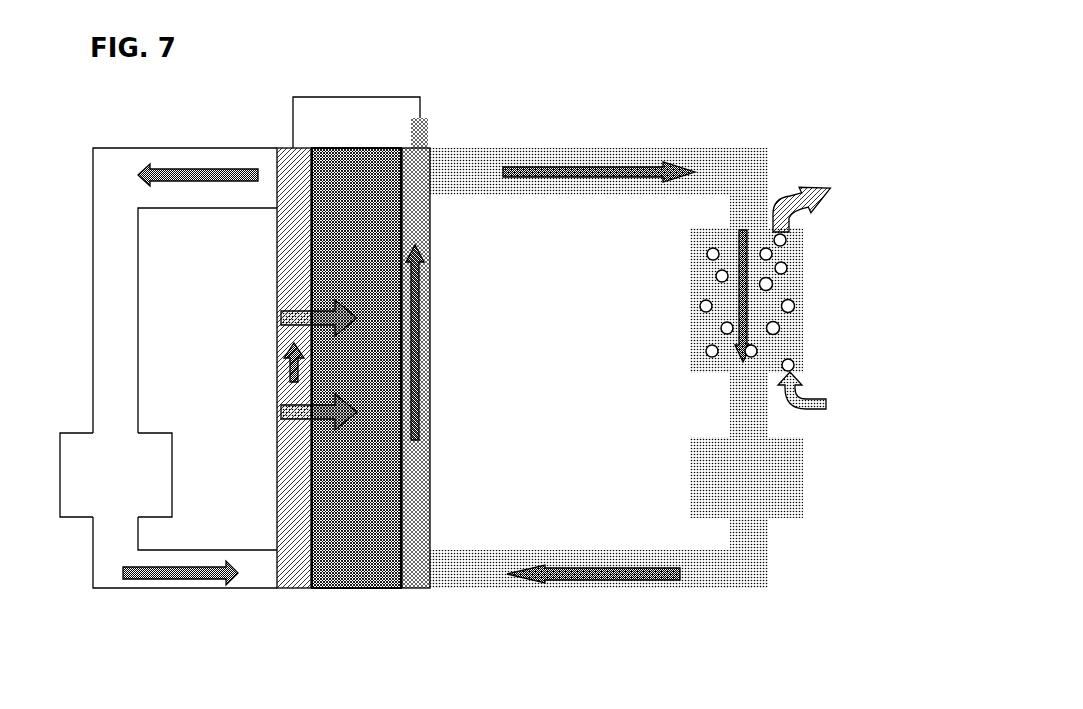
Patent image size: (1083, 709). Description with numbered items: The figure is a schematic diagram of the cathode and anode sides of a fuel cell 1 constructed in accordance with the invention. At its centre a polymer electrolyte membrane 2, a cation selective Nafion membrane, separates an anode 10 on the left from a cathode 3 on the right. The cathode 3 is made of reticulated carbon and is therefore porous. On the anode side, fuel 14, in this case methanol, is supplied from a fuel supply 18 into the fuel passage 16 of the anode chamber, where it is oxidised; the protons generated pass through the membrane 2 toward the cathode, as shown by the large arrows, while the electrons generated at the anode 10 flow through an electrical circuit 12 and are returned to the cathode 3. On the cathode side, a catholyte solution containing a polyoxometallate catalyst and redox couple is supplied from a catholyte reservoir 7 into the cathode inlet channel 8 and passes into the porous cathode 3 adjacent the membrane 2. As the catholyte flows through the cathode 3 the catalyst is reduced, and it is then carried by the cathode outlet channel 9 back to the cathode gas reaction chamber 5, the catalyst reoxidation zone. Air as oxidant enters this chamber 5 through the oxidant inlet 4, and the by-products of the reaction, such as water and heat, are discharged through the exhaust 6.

The fuel cell 1 is at (60, 188).
The polymer electrolyte membrane 2 is at (362, 558).
The cathode 3 is at (422, 572).
The oxidant inlet 4 is at (818, 400).
The cathode gas reaction chamber 5 is at (785, 291).
The exhaust 6 is at (820, 203).
The catholyte reservoir 7 is at (775, 468).
The cathode inlet channel 8 is at (680, 590).
The cathode outlet channel 9 is at (570, 178).
The anode 10 is at (297, 568).
The electrical circuit 12 is at (402, 84).
The fuel 14 is at (165, 580).
The fuel passage 16 is at (110, 568).
The fuel supply 18 is at (113, 493).